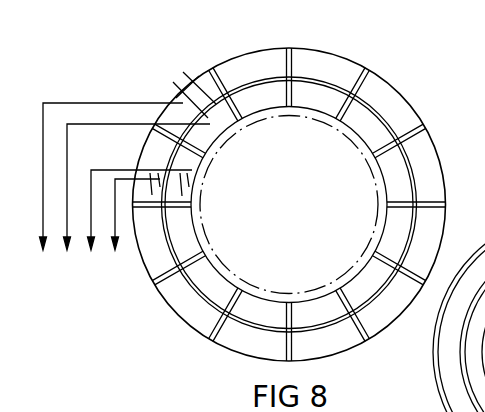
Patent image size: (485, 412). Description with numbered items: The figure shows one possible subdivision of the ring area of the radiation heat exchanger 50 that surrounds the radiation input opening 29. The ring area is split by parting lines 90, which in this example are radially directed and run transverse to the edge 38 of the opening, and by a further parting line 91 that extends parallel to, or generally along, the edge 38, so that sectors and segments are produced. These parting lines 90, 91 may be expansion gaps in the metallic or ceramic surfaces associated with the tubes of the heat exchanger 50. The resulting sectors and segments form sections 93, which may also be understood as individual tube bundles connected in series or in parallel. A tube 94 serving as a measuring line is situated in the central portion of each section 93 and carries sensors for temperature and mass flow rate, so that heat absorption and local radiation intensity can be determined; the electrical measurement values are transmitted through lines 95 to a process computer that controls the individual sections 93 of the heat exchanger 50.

The radiation input opening 29 is at (298, 200).
The edge 38 is at (289, 205).
The radiation heat exchanger 50 is at (424, 85).
The parting lines 90 is at (289, 73).
The parting line 91 is at (261, 81).
The sections 93 is at (425, 153).
The tube 94 is at (186, 80).
The lines 95 is at (113, 182).